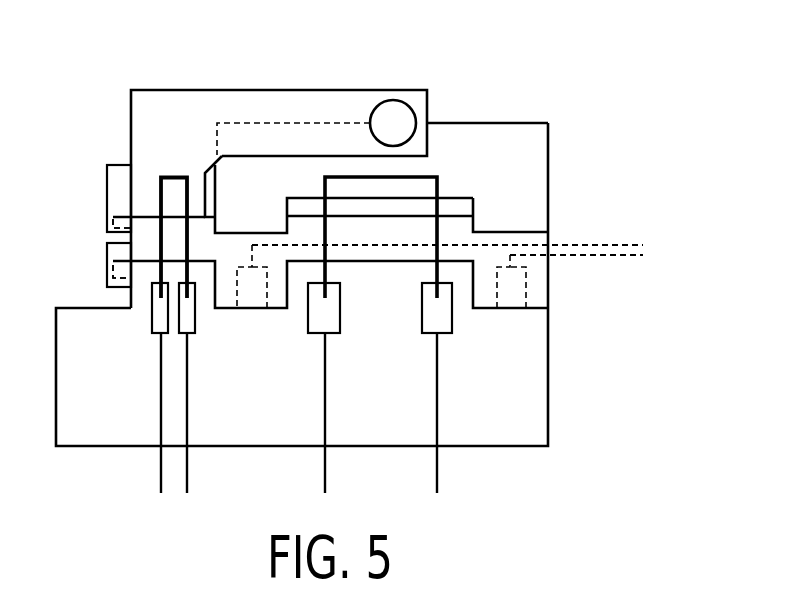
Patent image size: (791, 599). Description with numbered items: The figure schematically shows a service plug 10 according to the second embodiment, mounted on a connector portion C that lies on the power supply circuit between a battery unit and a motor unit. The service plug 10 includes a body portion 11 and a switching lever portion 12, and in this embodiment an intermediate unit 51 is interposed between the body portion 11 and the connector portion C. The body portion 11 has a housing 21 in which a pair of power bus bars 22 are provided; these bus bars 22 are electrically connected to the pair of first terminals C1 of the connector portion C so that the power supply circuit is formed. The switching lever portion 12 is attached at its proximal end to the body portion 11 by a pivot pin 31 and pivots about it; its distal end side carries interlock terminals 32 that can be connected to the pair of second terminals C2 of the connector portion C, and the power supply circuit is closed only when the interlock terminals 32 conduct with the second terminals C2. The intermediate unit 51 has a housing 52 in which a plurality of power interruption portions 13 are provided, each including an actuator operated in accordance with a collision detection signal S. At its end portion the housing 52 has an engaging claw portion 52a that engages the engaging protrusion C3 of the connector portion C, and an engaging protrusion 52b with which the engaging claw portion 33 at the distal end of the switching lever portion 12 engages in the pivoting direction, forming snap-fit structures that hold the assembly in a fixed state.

The service plug 10 is at (522, 44).
The body portion 11 is at (523, 122).
The switching lever portion 12 is at (192, 89).
The power interruption portion 13 is at (267, 292).
The housing 21 is at (548, 153).
The power bus bars 22 is at (322, 207).
The pivot pin 31 is at (405, 99).
The interlock terminals 32 is at (190, 232).
The engaging claw portion 33 is at (107, 176).
The intermediate unit 51 is at (548, 238).
The housing 52 is at (133, 237).
The engaging claw portion 52a is at (108, 257).
The engaging protrusion 52b is at (113, 220).
The connector portion C is at (548, 388).
The first terminals C1 is at (436, 333).
The second terminals C2 is at (165, 333).
The engaging protrusion C3 is at (113, 288).
The collision detection signal S is at (630, 240).